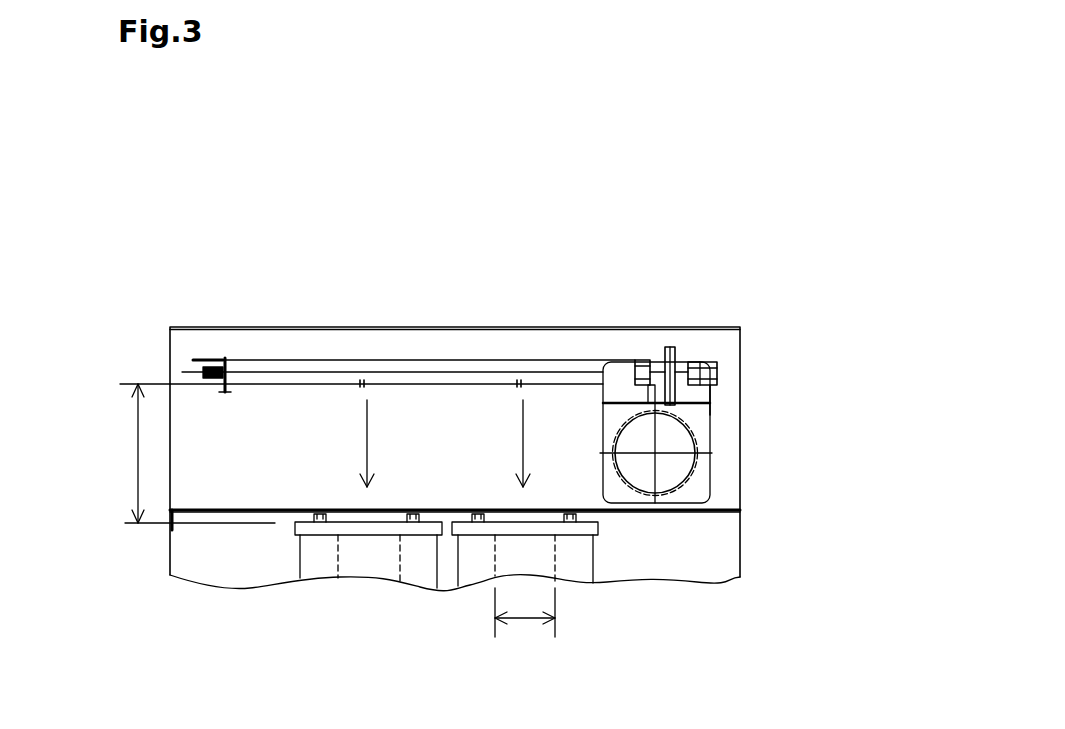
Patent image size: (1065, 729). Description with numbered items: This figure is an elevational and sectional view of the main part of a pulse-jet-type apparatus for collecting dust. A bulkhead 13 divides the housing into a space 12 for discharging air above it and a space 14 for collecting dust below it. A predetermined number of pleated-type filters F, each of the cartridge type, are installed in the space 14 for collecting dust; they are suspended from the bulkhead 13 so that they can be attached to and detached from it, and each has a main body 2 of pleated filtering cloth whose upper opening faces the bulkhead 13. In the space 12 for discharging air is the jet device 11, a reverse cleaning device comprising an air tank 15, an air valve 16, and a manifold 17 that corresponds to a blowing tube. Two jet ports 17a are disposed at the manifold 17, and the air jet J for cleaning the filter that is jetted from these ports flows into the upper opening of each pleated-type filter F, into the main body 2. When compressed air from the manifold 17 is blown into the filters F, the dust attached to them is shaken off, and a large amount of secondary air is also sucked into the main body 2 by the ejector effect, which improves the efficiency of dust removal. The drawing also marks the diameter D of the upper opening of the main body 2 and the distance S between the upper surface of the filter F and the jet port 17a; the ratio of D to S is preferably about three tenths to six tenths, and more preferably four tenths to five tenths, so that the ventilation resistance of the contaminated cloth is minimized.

The jet device 11 is at (727, 418).
The space for discharging air 12 is at (277, 443).
The bulkhead 13 is at (717, 513).
The space for collecting dust 14 is at (247, 565).
The air tank 15 is at (703, 477).
The air valve 16 is at (685, 357).
The manifold 17 is at (475, 375).
The jet ports 17a is at (360, 390).
The main body of pleated-type filter 2 is at (570, 570).
The air jet J is at (527, 443).
The distance between upper surface of filter and jet port S is at (140, 448).
The diameter of upper opening of main body D is at (518, 618).
The pleated-type filter F is at (603, 553).